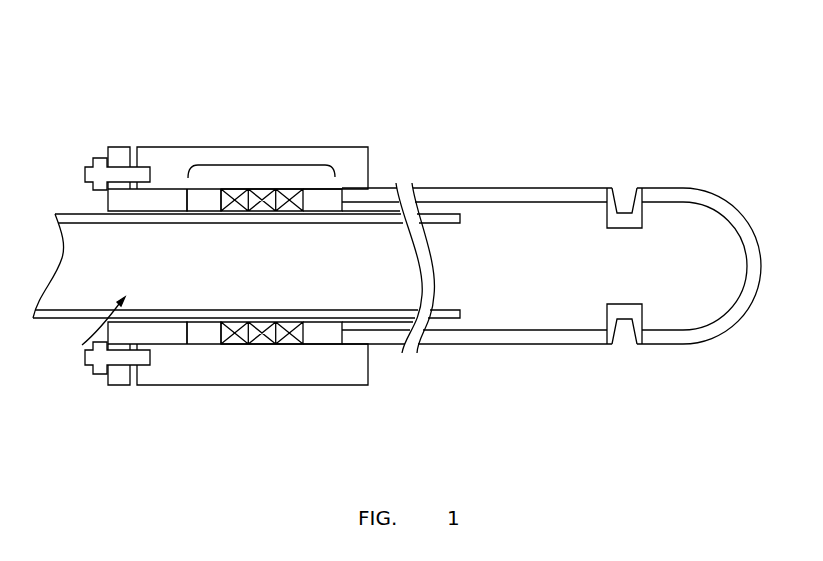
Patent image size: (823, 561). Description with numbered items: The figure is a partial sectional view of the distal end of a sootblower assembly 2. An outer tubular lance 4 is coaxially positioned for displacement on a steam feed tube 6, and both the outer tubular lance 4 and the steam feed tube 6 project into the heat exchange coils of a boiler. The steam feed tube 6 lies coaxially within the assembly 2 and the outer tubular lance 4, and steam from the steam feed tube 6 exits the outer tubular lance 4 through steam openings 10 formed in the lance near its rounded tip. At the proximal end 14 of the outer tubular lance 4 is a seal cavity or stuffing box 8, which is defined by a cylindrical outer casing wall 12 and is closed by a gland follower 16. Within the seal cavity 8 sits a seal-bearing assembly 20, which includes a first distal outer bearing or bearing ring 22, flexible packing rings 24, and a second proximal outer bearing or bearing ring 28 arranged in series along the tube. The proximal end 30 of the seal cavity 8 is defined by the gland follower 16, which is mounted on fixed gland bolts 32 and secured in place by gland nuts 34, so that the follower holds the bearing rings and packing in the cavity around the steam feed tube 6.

The sootblower assembly 2 is at (580, 95).
The outer tubular lance 4 is at (587, 186).
The steam feed tube 6 is at (437, 210).
The seal cavity 8 is at (185, 280).
The steam openings 10 is at (623, 195).
The cylindrical outer casing wall 12 is at (216, 375).
The proximal end of outer tubular lance 14 is at (376, 197).
The gland follower 16 is at (158, 198).
The seal-bearing assembly 20 is at (263, 165).
The first distal outer bearing ring 22 is at (322, 344).
The flexible packing rings 24 is at (263, 343).
The second proximal outer bearing ring 28 is at (186, 182).
The proximal end of seal cavity 30 is at (90, 328).
The gland bolts 32 is at (133, 160).
The gland nuts 34 is at (102, 157).